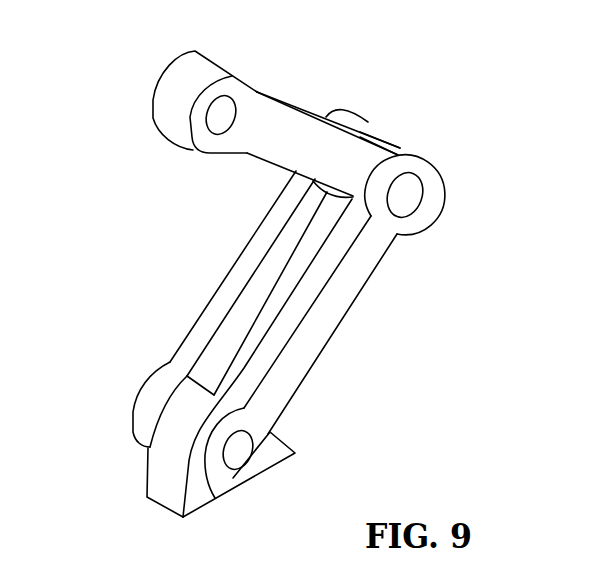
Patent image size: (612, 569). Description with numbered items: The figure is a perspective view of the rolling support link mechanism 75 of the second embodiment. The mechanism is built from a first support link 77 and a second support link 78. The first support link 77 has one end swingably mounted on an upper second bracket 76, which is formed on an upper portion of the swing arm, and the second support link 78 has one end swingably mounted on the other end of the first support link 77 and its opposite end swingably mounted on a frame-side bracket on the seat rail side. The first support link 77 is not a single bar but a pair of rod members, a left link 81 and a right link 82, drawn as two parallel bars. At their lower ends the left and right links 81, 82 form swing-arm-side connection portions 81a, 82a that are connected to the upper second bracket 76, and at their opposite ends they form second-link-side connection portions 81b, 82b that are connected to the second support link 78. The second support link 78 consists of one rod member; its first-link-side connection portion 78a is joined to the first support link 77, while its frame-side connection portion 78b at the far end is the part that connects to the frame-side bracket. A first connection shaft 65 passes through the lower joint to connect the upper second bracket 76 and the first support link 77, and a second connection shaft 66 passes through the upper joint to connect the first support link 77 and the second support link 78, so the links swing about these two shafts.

The rolling support link mechanism 75 is at (318, 87).
The upper second bracket 76 is at (163, 497).
The first support link 77 is at (353, 302).
The second support link 78 is at (292, 107).
The first-link-side connection portion 78a is at (382, 134).
The frame-side connection portion 78b is at (168, 106).
The left link 81 is at (298, 373).
The swing-arm-side connection portion 81a is at (233, 478).
The second-link-side connection portion 81b is at (430, 193).
The right link 82 is at (238, 273).
The swing-arm-side connection portion 82a is at (143, 418).
The second-link-side connection portion 82b is at (343, 112).
The first connection shaft 65 is at (238, 450).
The second connection shaft 66 is at (407, 197).